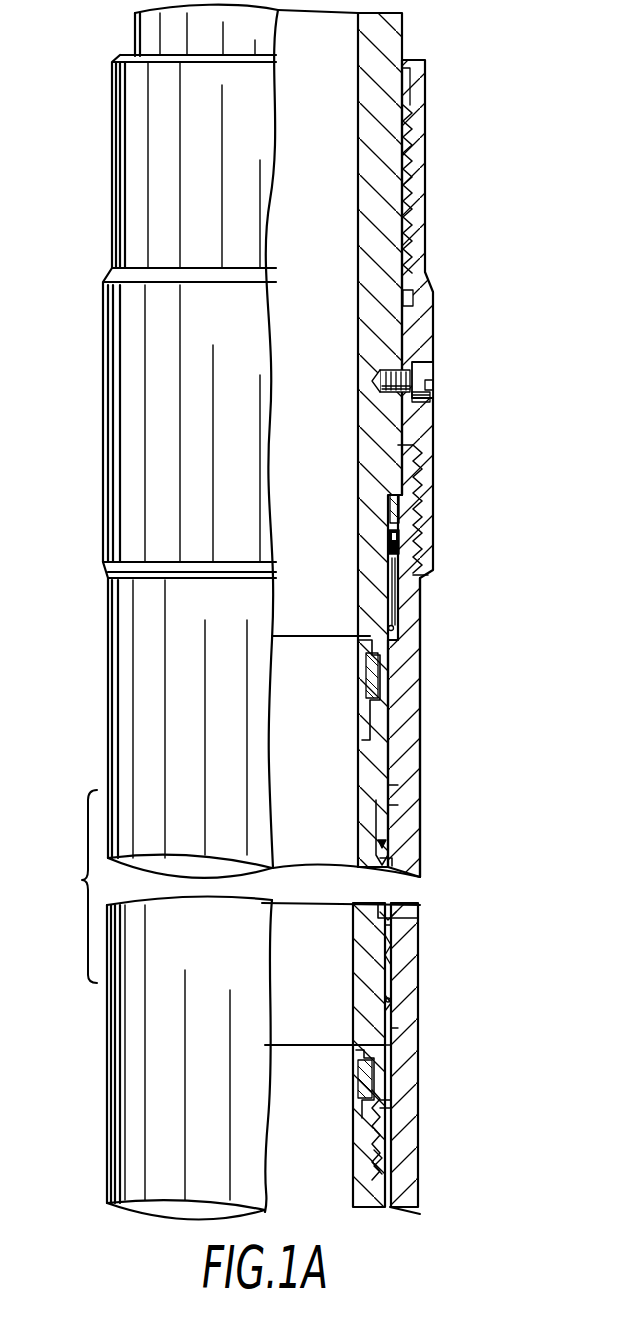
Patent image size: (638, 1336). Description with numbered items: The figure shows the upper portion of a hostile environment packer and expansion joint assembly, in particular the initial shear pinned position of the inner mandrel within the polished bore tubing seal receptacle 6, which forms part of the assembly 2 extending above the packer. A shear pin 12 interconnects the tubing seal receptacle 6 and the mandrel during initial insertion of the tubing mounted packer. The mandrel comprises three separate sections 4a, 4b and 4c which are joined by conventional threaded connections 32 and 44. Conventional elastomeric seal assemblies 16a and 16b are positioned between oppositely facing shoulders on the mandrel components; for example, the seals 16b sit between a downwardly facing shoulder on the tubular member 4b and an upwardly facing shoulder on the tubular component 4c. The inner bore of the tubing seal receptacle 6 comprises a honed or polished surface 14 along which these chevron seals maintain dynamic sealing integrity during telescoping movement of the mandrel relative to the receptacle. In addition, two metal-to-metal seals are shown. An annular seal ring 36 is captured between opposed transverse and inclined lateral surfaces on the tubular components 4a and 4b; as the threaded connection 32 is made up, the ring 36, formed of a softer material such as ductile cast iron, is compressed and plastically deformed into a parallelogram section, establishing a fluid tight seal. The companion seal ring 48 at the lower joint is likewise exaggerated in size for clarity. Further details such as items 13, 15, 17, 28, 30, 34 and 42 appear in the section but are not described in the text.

The coupling sleeve 2 is at (434, 671).
The mandrel section 4a is at (368, 440).
The mandrel section 4b is at (368, 1002).
The mandrel section 4c is at (366, 1143).
The polished bore tubing seal receptacle 6 is at (412, 767).
The shear pin 12 is at (420, 373).
The seal ring 13 is at (392, 528).
The polished surface 14 is at (389, 1006).
The seal ring 15 is at (393, 572).
The elastomeric seal assembly 16a is at (386, 860).
The elastomeric seal assembly 16b is at (388, 947).
The seal lip 17 is at (390, 627).
The recess 28 is at (400, 920).
The groove 30 is at (400, 1018).
The threaded connection 32 is at (393, 798).
The retaining element 34 is at (370, 842).
The annular seal ring 36 is at (366, 668).
The shoulder 42 is at (386, 1099).
The threaded connection 44 is at (375, 1158).
The seal ring 48 is at (362, 1080).